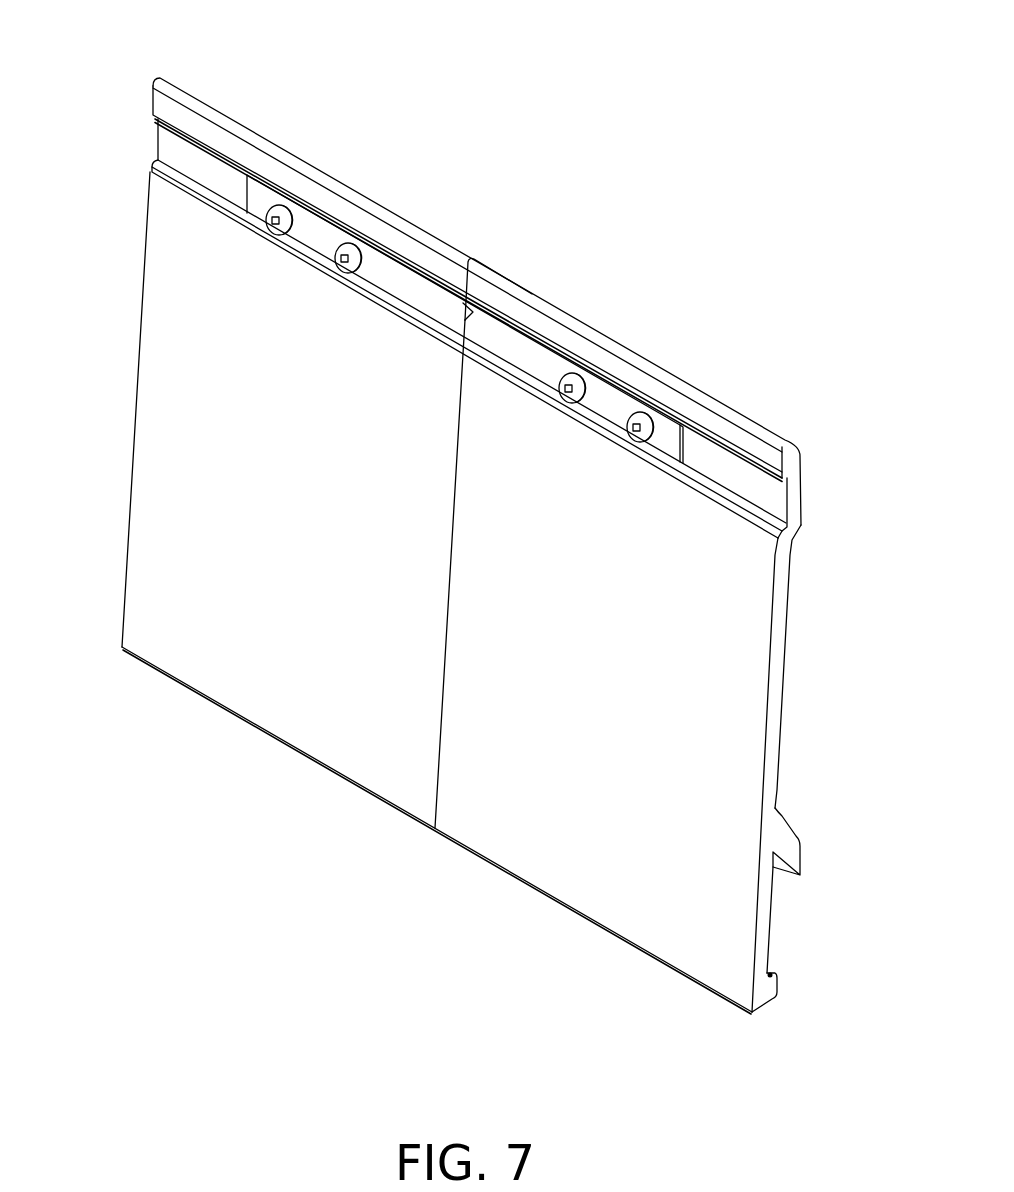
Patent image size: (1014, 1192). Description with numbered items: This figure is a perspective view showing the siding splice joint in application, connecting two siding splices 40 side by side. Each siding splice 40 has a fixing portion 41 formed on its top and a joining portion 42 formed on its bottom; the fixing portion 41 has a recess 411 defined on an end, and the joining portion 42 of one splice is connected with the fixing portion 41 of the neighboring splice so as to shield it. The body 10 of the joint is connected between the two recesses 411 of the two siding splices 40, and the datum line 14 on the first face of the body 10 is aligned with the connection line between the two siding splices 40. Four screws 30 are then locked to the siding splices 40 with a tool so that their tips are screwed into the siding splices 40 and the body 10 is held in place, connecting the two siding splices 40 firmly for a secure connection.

The body 10 is at (695, 437).
The datum line 14 is at (495, 295).
The screws 30 is at (300, 197).
The siding splice 40 is at (135, 368).
The fixing portion 41 is at (533, 275).
The recess 411 is at (195, 160).
The joining portion 42 is at (765, 923).